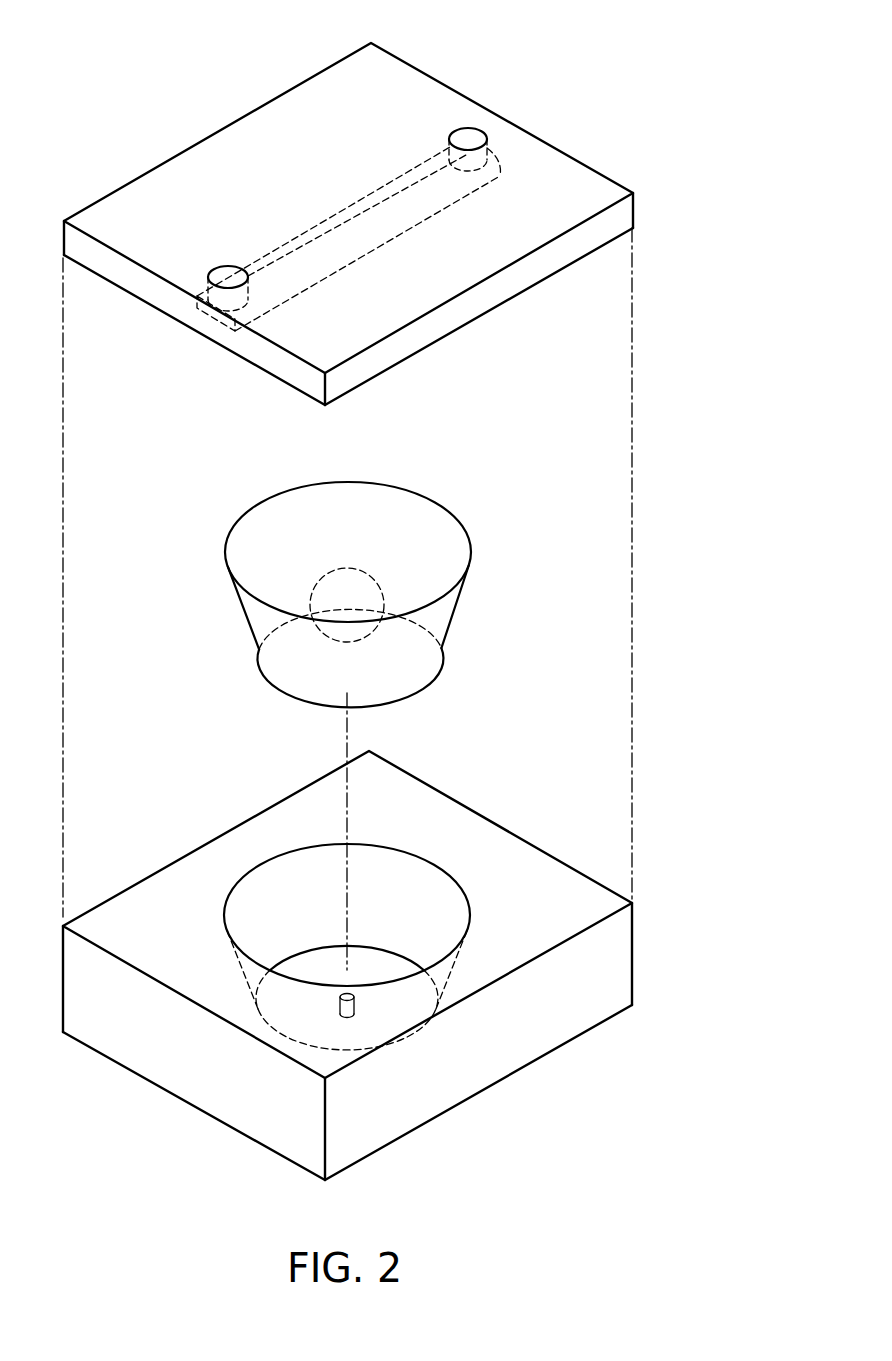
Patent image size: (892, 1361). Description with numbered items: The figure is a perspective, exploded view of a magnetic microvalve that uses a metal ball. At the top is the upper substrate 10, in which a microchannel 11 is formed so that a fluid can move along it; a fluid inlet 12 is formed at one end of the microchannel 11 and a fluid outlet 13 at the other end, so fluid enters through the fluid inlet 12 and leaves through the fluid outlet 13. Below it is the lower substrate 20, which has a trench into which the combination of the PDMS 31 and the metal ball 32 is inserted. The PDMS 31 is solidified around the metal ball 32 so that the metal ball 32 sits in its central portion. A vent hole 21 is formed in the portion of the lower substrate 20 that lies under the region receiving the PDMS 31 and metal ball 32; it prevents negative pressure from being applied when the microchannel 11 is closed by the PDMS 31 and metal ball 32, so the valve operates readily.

The upper substrate 10 is at (625, 218).
The microchannel 11 is at (432, 190).
The fluid inlet 12 is at (223, 276).
The fluid outlet 13 is at (468, 129).
The lower substrate 20 is at (618, 958).
The vent hole 21 is at (347, 1018).
The PDMS 31 is at (442, 518).
The metal ball 32 is at (380, 603).